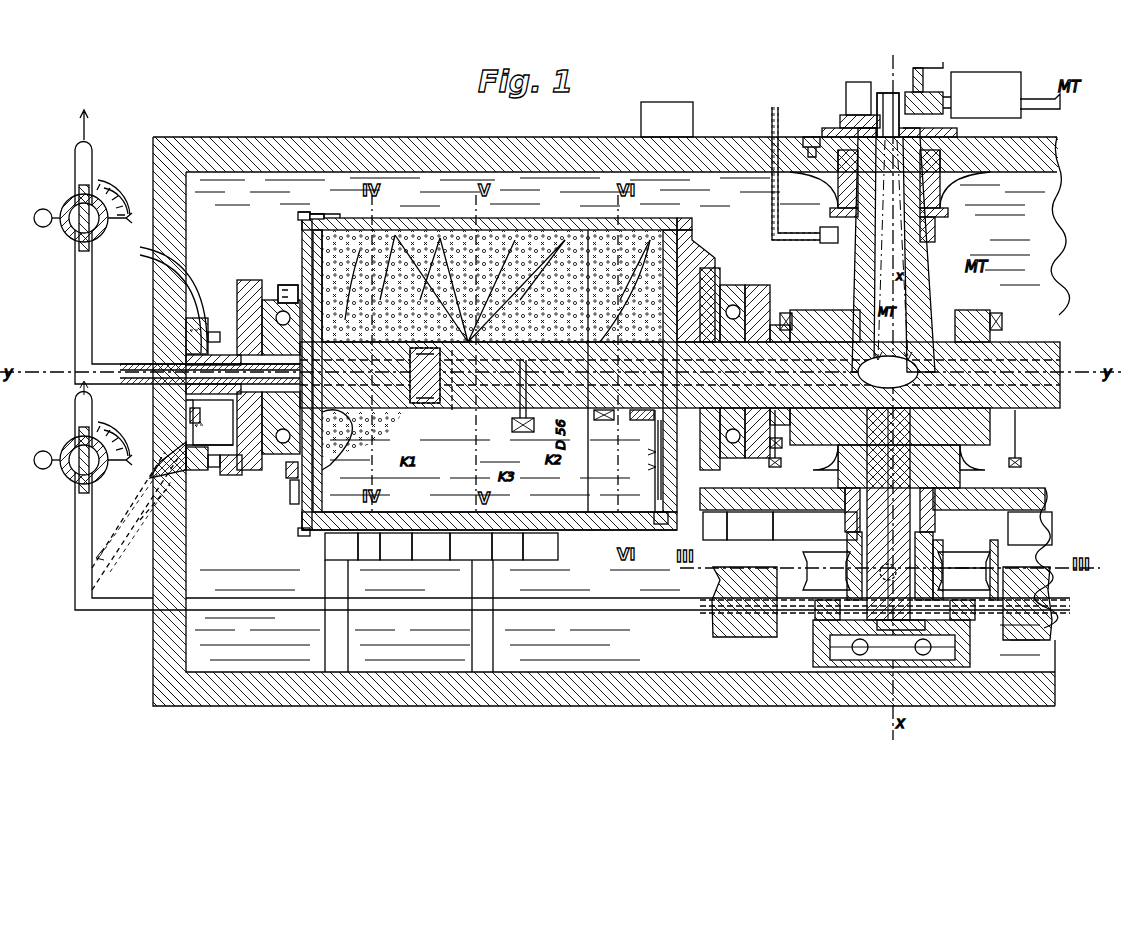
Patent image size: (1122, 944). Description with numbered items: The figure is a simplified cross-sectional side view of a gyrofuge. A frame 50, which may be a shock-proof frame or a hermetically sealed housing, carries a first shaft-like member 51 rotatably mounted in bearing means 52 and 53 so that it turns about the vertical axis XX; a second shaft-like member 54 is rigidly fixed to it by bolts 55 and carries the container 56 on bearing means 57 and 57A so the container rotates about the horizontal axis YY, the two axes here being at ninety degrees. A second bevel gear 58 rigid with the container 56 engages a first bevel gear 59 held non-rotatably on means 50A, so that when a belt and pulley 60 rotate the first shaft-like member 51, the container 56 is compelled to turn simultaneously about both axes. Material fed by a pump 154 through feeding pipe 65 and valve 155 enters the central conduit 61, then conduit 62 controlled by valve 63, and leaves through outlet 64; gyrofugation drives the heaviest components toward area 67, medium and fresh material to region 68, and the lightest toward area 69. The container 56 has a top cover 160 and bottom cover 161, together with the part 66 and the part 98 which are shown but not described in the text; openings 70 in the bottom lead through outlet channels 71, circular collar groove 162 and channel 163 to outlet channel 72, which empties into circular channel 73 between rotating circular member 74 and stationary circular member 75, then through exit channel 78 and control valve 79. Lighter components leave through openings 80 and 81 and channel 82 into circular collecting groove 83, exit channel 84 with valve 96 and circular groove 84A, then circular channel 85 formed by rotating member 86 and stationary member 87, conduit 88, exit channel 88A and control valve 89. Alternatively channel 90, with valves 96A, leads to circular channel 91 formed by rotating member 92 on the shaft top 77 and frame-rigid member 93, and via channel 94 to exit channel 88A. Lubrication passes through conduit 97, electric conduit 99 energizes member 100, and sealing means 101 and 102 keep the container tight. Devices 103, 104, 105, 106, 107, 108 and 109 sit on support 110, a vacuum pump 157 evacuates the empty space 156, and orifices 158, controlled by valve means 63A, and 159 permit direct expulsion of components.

The frame 50 is at (528, 148).
The means for non-rotatably mounting first bevel gear 50A is at (1040, 512).
The first shaft-like member 51 is at (935, 262).
The bearing means 52 is at (945, 198).
The bearing means 53 is at (960, 652).
The second shaft-like member 54 is at (778, 325).
The bolts 55 is at (995, 318).
The container 56 is at (505, 218).
The bearing means 57 is at (755, 300).
The bearing means 57A is at (280, 285).
The second bevel gear 58 is at (715, 270).
The first bevel gear 59 is at (740, 496).
The belt and pulley 60 is at (985, 568).
The central conduit 61 is at (918, 290).
The conduit 62 is at (808, 340).
The valve 63 is at (540, 416).
The valve means 63A is at (316, 218).
The outlet 64 is at (555, 240).
The feeding pipe 65 is at (888, 95).
The drum bottom 66 is at (590, 532).
The area of heaviest components 67 is at (395, 235).
The region of medium and light particles 68 is at (440, 238).
The area of lighter components 69 is at (648, 240).
The openings 70 is at (300, 218).
The outlet channels 71 is at (304, 250).
The outlet channel 72 is at (272, 300).
The circular channel 73 is at (190, 360).
The circular member 74 is at (232, 408).
The circular member 75 is at (200, 330).
The shaft top 77 is at (245, 283).
The exit channel 78 is at (88, 310).
The control valve 79 is at (70, 232).
The openings 80 is at (690, 224).
The openings 81 is at (724, 286).
The channel 82 is at (656, 466).
The circular collecting groove 83 is at (606, 420).
The exit channel 84 is at (1055, 385).
The circular groove 84A is at (826, 571).
The circular channel 85 is at (960, 575).
The rotating circular channel making member 86 is at (930, 600).
The stationary circular channel member 87 is at (830, 630).
The conduit 88 is at (830, 612).
The exit channel 88A is at (88, 592).
The control valve 89 is at (70, 474).
The channel 90 is at (452, 412).
The circular channel 91 is at (216, 460).
The circular rotating member 92 is at (232, 465).
The circular channel member 93 is at (203, 460).
The channel 94 is at (140, 528).
The valve 96 is at (776, 450).
The valves 96A is at (640, 420).
The lubrication conduit 97 is at (420, 230).
The passage 98 is at (200, 270).
The electric conduit 99 is at (780, 210).
The electrically operated member 100 is at (432, 405).
The sealing means 101 is at (406, 400).
The sealing means 102 is at (655, 438).
The magnetic waves producing device 103 is at (341, 546).
The temperature changing device 104 is at (369, 546).
The ray emitting device 105 is at (396, 546).
The r.p.m. controlling device 106 is at (431, 546).
The control device 107 is at (471, 546).
The control device 108 is at (507, 546).
The control device 109 is at (540, 546).
The support 110 is at (474, 586).
The pump 154 is at (1002, 78).
The valve 155 is at (930, 95).
The empty space 156 is at (300, 188).
The vacuum pump 157 is at (688, 120).
The orifice 158 is at (320, 216).
The orifice 159 is at (668, 520).
The top cover 160 is at (700, 248).
The bottom cover 161 is at (313, 245).
The circular collar groove 162 is at (292, 494).
The channel 163 is at (290, 470).